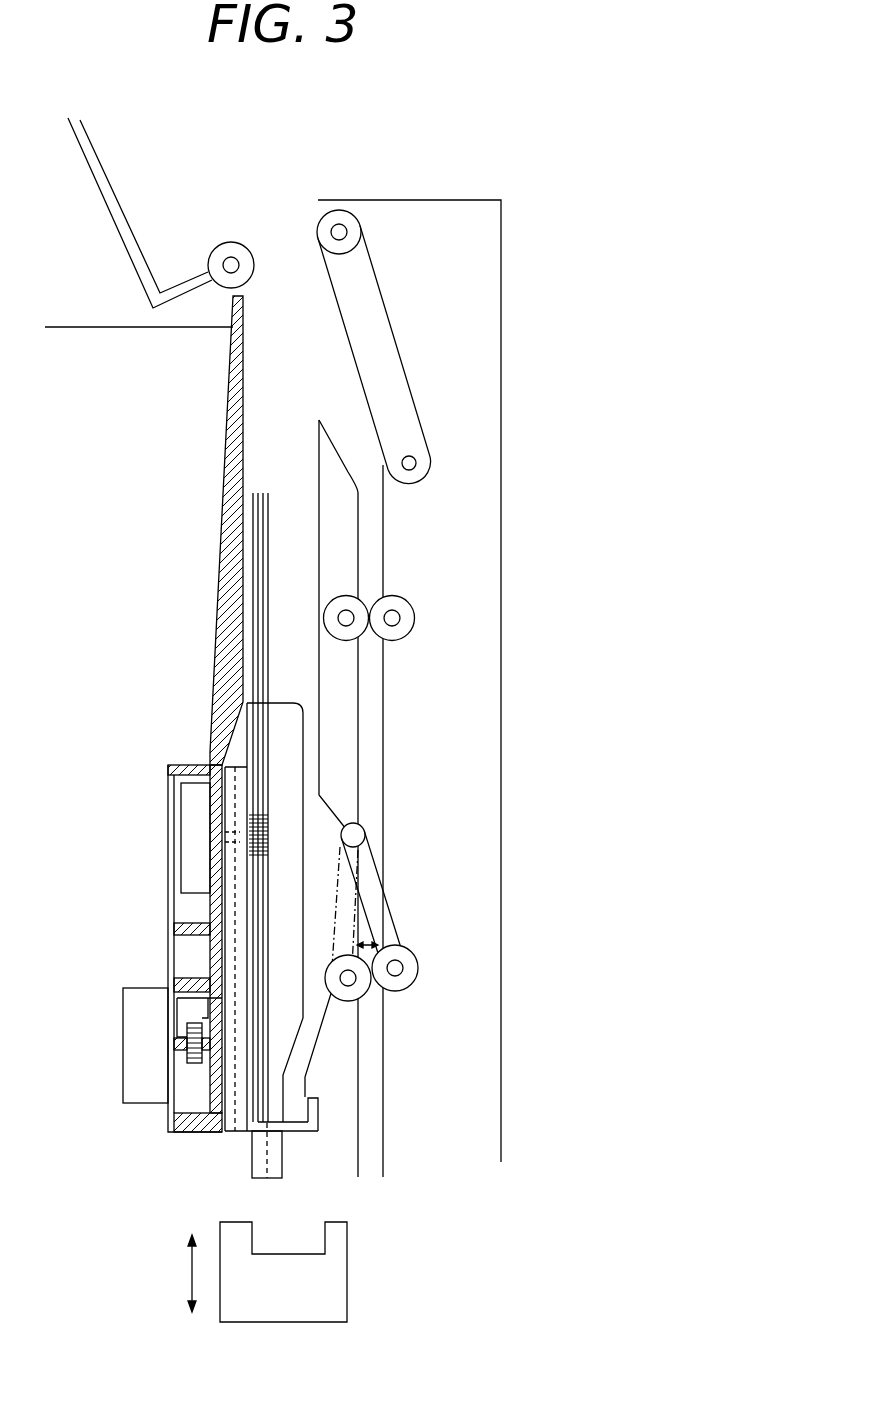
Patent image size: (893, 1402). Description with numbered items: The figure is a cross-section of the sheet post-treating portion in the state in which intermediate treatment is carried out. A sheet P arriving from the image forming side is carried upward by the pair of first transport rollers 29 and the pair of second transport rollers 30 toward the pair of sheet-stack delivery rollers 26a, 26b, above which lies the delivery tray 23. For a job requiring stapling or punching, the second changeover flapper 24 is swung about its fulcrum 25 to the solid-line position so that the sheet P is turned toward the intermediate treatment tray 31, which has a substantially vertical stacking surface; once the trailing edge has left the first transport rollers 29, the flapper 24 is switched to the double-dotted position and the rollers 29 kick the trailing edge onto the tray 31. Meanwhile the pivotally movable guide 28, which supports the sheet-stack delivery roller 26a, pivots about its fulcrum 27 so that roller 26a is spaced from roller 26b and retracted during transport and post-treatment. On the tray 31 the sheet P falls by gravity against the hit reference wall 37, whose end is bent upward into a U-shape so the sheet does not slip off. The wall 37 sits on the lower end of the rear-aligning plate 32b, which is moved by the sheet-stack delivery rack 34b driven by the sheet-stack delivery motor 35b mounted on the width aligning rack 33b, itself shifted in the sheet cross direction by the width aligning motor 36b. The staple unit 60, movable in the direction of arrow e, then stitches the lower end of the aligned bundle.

The delivery tray 23 is at (100, 157).
The sheet-stack delivery roller 26b is at (231, 243).
The sheet-stack delivery roller 26a is at (343, 221).
The pivotally movable guide 28 is at (377, 350).
The fulcrum 27 is at (417, 462).
The intermediate treatment tray 31 is at (232, 511).
The sheet P is at (270, 503).
The pair of second transport rollers 30 is at (423, 612).
The rear-aligning plate 32b is at (288, 738).
The fulcrum 25 is at (362, 832).
The second changeover flapper 24 is at (350, 882).
The pair of first transport rollers 29 is at (420, 962).
The sheet-stack delivery motor 35b is at (192, 828).
The width aligning rack 33b is at (187, 1007).
The width aligning motor 36b is at (132, 1043).
The sheet-stack delivery rack 34b is at (257, 1157).
The hit reference wall 37 is at (309, 1131).
The staple unit 60 is at (337, 1267).
The arrow e is at (183, 1273).